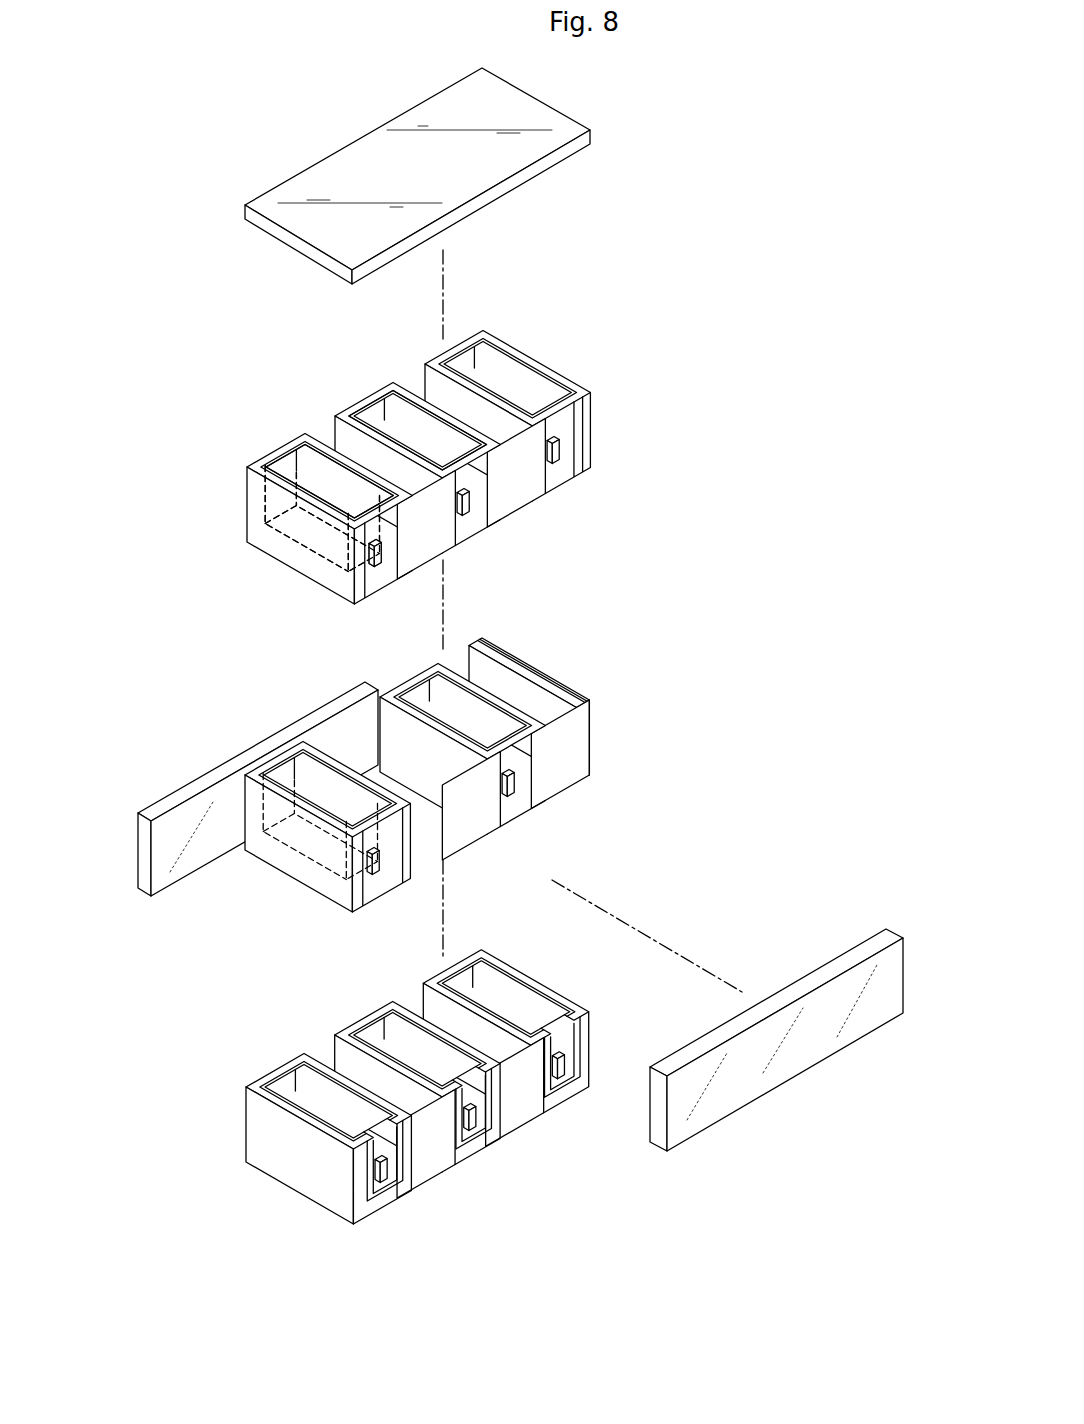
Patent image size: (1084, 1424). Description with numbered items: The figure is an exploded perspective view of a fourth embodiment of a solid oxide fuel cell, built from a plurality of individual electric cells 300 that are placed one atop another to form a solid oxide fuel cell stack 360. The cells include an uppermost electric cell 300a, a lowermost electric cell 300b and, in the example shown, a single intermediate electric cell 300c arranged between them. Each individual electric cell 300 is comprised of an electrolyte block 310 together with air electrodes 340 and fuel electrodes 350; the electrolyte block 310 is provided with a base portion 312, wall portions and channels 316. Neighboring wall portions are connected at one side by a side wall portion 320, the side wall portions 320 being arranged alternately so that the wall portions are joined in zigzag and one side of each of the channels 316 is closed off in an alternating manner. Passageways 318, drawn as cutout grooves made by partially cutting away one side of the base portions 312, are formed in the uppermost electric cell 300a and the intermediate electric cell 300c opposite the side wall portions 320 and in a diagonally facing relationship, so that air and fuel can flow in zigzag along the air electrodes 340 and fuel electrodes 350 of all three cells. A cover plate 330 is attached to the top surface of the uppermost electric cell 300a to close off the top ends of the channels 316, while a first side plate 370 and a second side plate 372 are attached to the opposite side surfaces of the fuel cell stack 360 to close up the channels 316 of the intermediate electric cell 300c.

The individual electric cell 300 is at (440, 788).
The uppermost electric cell 300a is at (457, 788).
The lowermost electric cell 300b is at (540, 975).
The intermediate electric cell 300c is at (405, 775).
The electrolyte block 310 is at (543, 358).
The base portion 312 is at (442, 545).
The channel 316 is at (558, 435).
The passageway 318 is at (350, 577).
The side wall portion 320 is at (266, 468).
The cover plate 330 is at (520, 108).
The air electrode 340 is at (350, 410).
The fuel electrode 350 is at (437, 362).
The solid oxide fuel cell stack 360 is at (170, 558).
The first side plate 370 is at (797, 1062).
The second side plate 372 is at (142, 857).